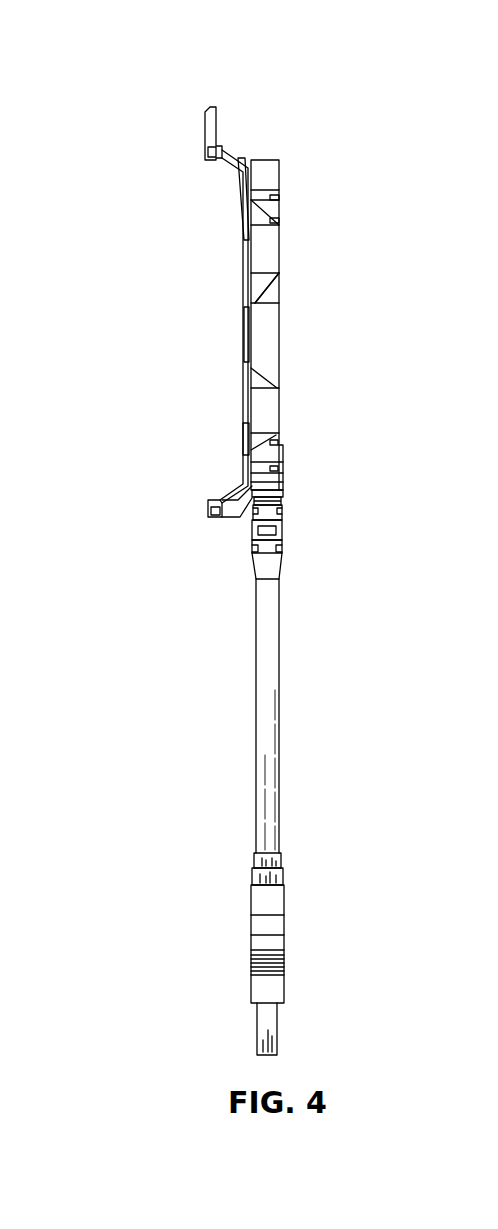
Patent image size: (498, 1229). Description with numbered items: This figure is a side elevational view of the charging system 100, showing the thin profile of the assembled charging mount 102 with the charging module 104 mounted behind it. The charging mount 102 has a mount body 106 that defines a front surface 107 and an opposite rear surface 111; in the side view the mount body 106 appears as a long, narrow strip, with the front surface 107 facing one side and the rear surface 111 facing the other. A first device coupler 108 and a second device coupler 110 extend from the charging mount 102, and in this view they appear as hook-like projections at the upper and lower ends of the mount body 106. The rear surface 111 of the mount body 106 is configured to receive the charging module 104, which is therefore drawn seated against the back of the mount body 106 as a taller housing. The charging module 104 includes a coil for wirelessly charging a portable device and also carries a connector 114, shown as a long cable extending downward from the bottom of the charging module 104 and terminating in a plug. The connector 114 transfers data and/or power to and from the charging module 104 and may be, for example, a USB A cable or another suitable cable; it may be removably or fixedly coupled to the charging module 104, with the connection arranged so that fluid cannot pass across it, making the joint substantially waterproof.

The charging system 100 is at (112, 34).
The charging mount 102 is at (241, 421).
The charging module 104 is at (287, 400).
The mount body 106 is at (235, 206).
The front surface 107 is at (241, 347).
The first device coupler 108 is at (210, 108).
The second device coupler 110 is at (212, 520).
The rear surface 111 is at (262, 297).
The connector 114 is at (290, 748).